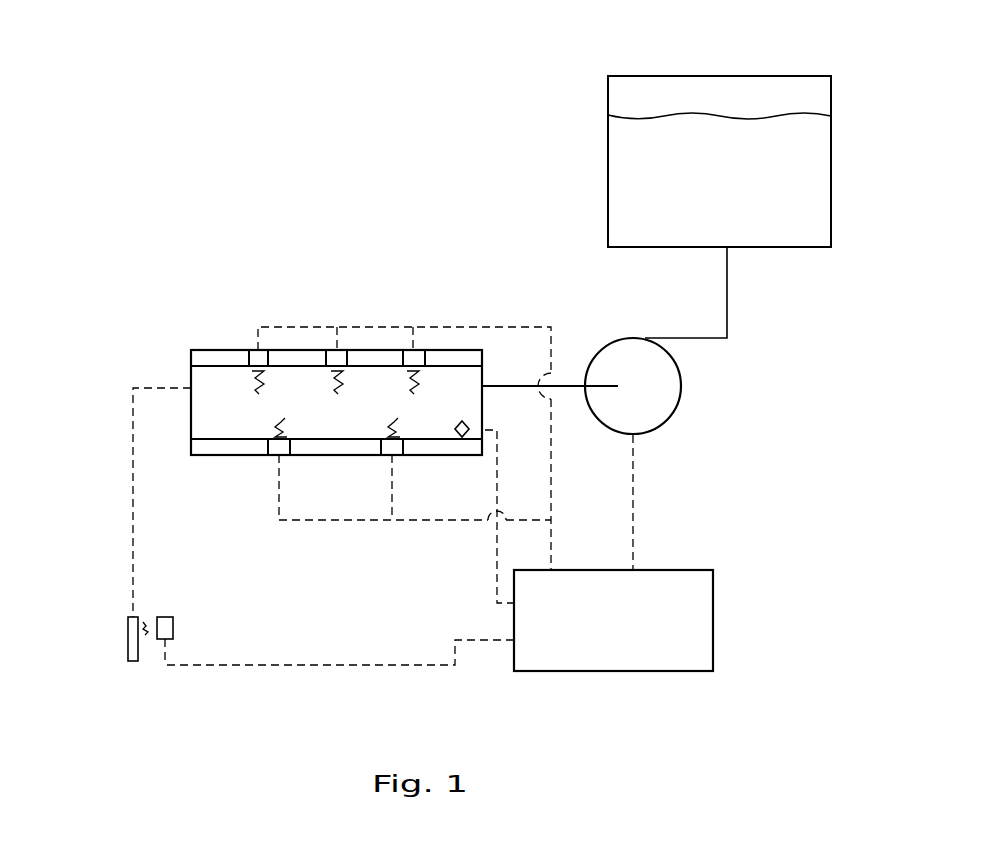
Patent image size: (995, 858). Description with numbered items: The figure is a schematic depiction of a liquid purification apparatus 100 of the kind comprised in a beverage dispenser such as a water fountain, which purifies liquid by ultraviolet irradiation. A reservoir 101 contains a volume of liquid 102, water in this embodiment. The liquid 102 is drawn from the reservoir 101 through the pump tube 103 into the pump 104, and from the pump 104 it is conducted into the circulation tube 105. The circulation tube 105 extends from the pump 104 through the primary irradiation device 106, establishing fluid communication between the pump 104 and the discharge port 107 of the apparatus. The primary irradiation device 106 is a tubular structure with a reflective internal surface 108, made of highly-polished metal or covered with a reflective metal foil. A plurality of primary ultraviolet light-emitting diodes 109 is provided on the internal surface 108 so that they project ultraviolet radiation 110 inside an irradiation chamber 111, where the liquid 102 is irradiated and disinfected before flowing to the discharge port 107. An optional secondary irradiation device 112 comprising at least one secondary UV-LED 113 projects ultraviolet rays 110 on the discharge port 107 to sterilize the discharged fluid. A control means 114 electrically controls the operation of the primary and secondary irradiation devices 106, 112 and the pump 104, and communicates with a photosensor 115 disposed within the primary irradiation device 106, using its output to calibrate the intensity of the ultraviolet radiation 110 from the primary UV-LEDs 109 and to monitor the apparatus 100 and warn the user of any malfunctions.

The liquid purification apparatus 100 is at (254, 184).
The reservoir 101 is at (608, 89).
The liquid 102 is at (701, 192).
The pump tube 103 is at (727, 287).
The pump 104 is at (670, 397).
The circulation tube 105 is at (518, 385).
The primary irradiation device 106 is at (375, 327).
The discharge port 107 is at (128, 640).
The internal surface 108 is at (205, 370).
The primary ultraviolet light-emitting diodes 109 is at (255, 358).
The ultraviolet radiation 110 is at (280, 418).
The irradiation chamber 111 is at (440, 420).
The secondary irradiation device 112 is at (185, 598).
The secondary UV-LED 113 is at (165, 625).
The control means 114 is at (695, 663).
The photosensor 115 is at (463, 421).